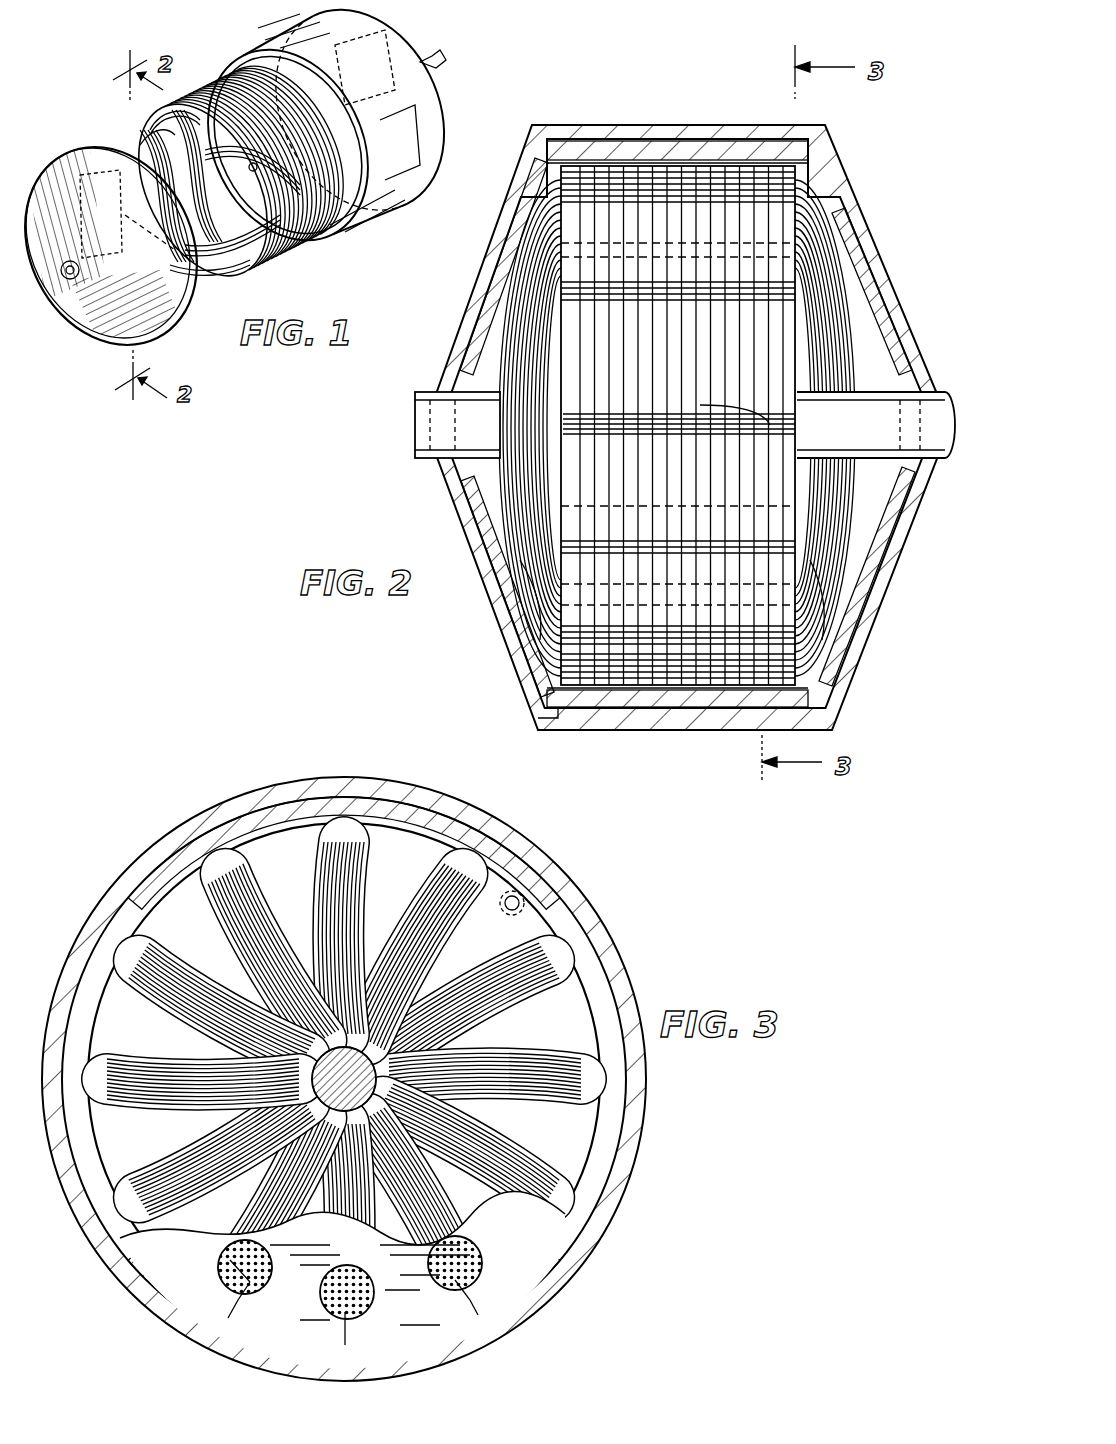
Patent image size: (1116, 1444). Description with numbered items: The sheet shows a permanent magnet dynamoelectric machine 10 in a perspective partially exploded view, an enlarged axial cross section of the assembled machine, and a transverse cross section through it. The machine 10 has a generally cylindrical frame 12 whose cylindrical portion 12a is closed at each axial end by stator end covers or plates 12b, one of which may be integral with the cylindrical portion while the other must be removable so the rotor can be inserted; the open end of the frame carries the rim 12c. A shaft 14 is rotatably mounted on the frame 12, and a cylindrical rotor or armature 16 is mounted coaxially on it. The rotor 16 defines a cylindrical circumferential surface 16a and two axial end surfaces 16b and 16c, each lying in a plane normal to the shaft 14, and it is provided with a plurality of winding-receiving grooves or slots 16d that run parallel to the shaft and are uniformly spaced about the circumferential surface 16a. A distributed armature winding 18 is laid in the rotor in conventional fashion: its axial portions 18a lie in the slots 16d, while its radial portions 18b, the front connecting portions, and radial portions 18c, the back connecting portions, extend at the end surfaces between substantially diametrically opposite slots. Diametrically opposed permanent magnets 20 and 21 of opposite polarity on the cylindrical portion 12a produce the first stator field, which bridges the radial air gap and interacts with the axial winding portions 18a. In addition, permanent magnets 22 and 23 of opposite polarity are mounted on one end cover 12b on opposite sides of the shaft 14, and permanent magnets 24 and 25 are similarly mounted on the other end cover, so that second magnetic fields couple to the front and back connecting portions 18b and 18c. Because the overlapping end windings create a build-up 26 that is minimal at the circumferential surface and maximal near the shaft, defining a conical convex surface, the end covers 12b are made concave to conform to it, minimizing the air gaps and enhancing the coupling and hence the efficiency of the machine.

In FIG. 1, the dynamoelectric machine 10 is at (403, 32).
In FIG. 1, the frame 12 is at (422, 123).
In FIG. 2, the frame 12 is at (698, 732).
In FIG. 3, the frame 12 is at (590, 913).
In FIG. 1, the cylindrical portion 12a is at (300, 14).
In FIG. 2, the cylindrical portion 12a is at (592, 722).
In FIG. 1, the end cover 12b is at (100, 333).
In FIG. 2, the end cover 12b is at (888, 308).
In FIG. 1, the housing rim 12c is at (252, 72).
In FIG. 1, the shaft 14 is at (442, 57).
In FIG. 2, the shaft 14 is at (423, 438).
In FIG. 3, the shaft 14 is at (360, 1070).
In FIG. 1, the rotor 16 is at (237, 181).
In FIG. 2, the rotor 16 is at (657, 389).
In FIG. 3, the rotor 16 is at (399, 1079).
In FIG. 1, the cylindrical circumferential surface 16a is at (313, 233).
In FIG. 2, the cylindrical circumferential surface 16a is at (720, 166).
In FIG. 3, the cylindrical circumferential surface 16a is at (590, 977).
In FIG. 1, the axial end surface 16b is at (258, 258).
In FIG. 2, the axial end surface 16b is at (560, 180).
In FIG. 2, the axial end surface 16c is at (799, 180).
In FIG. 3, the axial end surface 16c is at (550, 1223).
In FIG. 1, the rotor coil winding-receiving grooves 16d is at (300, 238).
In FIG. 2, the rotor coil winding-receiving grooves 16d is at (603, 298).
In FIG. 3, the rotor coil winding-receiving grooves 16d is at (597, 1067).
In FIG. 1, the distributed armature winding 18 is at (145, 143).
In FIG. 2, the axial portions 18a is at (762, 420).
In FIG. 3, the axial portions 18a is at (245, 1282).
In FIG. 2, the radial portions 18b is at (548, 598).
In FIG. 2, the radial portions 18c is at (806, 600).
In FIG. 3, the radial portions 18c is at (550, 1167).
In FIG. 2, the permanent magnet 20 is at (635, 141).
In FIG. 3, the permanent magnet 20 is at (270, 812).
In FIG. 2, the permanent magnet 21 is at (652, 700).
In FIG. 3, the permanent magnet 21 is at (510, 1302).
In FIG. 2, the permanent magnet 22 is at (503, 270).
In FIG. 2, the permanent magnet 23 is at (475, 500).
In FIG. 2, the permanent magnet 24 is at (840, 233).
In FIG. 2, the permanent magnet 25 is at (875, 522).
In FIG. 2, the build-up 26 is at (507, 518).